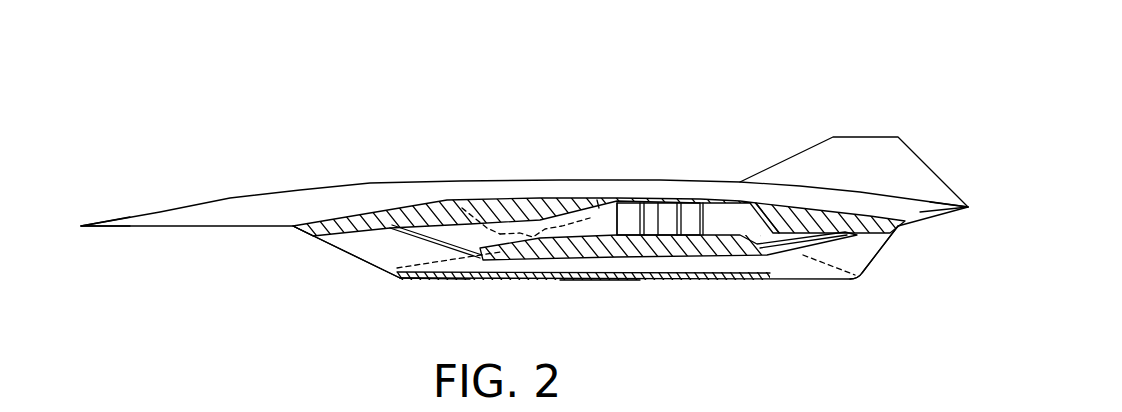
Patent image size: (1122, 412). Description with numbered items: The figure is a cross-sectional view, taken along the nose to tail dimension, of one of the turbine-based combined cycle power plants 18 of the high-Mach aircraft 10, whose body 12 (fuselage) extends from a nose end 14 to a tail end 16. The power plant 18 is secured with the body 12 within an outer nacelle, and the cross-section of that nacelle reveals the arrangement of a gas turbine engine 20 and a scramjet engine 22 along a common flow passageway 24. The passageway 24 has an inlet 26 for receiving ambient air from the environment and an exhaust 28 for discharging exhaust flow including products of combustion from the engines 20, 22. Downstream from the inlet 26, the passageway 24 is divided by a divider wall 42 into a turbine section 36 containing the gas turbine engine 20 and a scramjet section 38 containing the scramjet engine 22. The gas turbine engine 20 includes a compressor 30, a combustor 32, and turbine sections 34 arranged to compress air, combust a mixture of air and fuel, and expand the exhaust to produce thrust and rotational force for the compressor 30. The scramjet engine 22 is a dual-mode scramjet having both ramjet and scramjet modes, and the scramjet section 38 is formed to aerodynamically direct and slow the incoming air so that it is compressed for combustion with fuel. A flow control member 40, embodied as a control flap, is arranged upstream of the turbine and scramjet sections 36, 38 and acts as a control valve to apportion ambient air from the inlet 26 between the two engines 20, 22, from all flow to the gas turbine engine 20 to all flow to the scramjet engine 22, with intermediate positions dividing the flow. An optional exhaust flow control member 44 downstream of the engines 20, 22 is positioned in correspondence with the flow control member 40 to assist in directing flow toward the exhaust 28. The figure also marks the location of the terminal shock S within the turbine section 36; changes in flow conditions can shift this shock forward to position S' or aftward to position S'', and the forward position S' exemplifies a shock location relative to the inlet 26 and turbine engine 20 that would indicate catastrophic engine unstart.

The aircraft 10 is at (355, 72).
The body 12 is at (297, 196).
The nose end 14 is at (77, 212).
The tail end 16 is at (971, 196).
The turbine-based combined cycle power plant 18 is at (502, 206).
The gas turbine engine 20 is at (667, 210).
The scramjet engine 22 is at (662, 272).
The flow passageway 24 is at (390, 262).
The inlet 26 is at (343, 259).
The exhaust 28 is at (895, 262).
The compressor 30 is at (650, 217).
The combustor 32 is at (690, 217).
The turbine section 34 is at (700, 200).
The turbine section 36 is at (612, 210).
The scramjet section 38 is at (595, 272).
The flow control member 40 is at (413, 222).
The divider wall 42 is at (553, 242).
The exhaust flow control member 44 is at (812, 250).
The terminal shock S is at (545, 189).
The forward terminal shock position S' is at (460, 189).
The aftward terminal shock position S'' is at (603, 165).